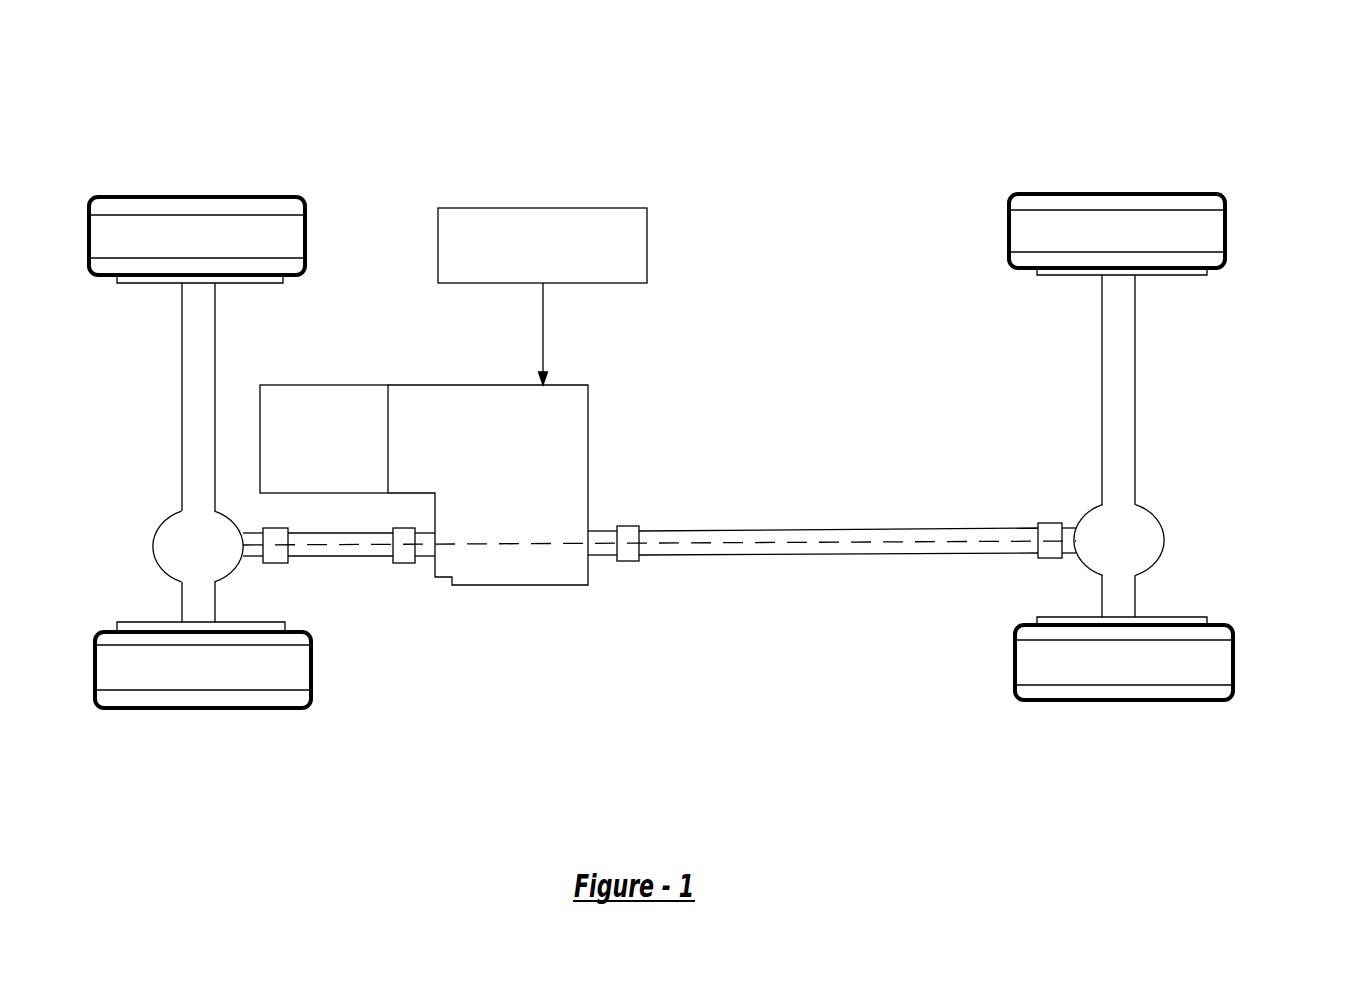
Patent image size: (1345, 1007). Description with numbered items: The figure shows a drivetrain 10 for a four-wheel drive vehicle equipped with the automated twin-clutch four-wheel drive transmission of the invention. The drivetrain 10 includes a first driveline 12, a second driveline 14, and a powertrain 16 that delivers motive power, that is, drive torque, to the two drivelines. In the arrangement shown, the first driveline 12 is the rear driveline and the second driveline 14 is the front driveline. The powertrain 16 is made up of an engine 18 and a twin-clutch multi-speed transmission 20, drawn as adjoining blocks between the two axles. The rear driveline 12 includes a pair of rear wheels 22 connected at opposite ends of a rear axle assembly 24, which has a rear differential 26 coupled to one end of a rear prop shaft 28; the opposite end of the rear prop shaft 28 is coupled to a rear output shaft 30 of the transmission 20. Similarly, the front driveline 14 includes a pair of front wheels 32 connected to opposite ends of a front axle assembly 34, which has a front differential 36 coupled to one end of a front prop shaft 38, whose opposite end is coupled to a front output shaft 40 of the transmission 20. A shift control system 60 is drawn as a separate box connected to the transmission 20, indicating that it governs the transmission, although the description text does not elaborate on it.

The drivetrain 10 is at (860, 116).
The first driveline 12 is at (885, 376).
The second driveline 14 is at (372, 622).
The powertrain 16 is at (424, 446).
The engine 18 is at (310, 458).
The twin-clutch multi-speed transmission 20 is at (482, 457).
The rear wheels 22 is at (1227, 223).
The rear axle assembly 24 is at (1126, 403).
The rear differential 26 is at (1140, 543).
The rear prop shaft 28 is at (983, 535).
The rear output shaft 30 is at (602, 543).
The front wheels 32 is at (308, 227).
The front axle assembly 34 is at (190, 406).
The front differential 36 is at (188, 545).
The front prop shaft 38 is at (313, 548).
The front output shaft 40 is at (425, 550).
The shift control system 60 is at (625, 257).